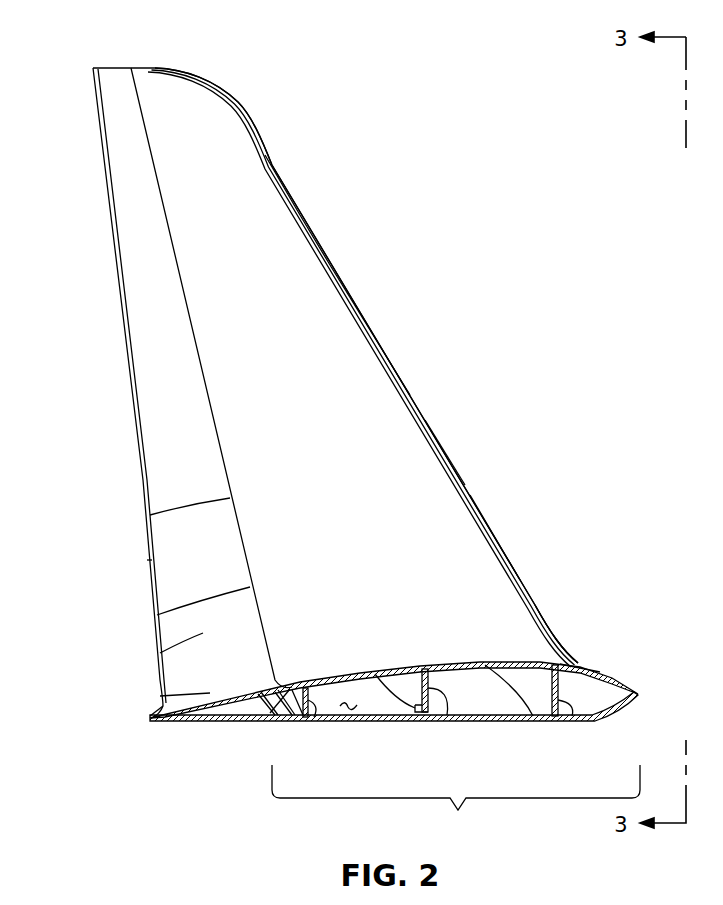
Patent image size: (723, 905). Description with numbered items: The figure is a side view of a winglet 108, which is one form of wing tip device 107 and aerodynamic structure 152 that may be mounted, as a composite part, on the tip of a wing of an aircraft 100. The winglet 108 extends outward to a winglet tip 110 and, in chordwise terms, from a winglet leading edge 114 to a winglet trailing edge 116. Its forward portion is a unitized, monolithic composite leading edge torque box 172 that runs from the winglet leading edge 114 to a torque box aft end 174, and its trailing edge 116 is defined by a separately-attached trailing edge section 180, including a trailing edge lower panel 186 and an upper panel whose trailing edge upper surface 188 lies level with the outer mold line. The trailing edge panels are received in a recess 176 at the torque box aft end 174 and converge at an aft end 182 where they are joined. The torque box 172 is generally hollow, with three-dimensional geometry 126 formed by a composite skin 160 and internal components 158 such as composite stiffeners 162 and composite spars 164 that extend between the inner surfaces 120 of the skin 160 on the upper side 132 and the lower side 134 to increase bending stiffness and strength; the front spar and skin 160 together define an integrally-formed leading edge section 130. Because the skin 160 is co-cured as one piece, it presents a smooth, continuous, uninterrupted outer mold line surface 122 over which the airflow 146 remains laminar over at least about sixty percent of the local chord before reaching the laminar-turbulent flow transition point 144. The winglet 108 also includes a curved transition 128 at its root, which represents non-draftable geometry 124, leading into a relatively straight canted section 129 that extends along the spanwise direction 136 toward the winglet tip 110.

The aircraft 100 is at (276, 150).
The wing tip device 107 is at (177, 70).
The winglet 108 is at (212, 78).
The airflow 146 is at (241, 99).
The aerodynamic structure 152 is at (93, 67).
The winglet tip 110 is at (153, 66).
The upper side 132 is at (283, 227).
The lower side 134 is at (298, 268).
The spanwise direction 136 is at (328, 320).
The leading edge section 130 is at (373, 378).
The outer mold line (OML) surface 122 is at (408, 465).
The canted section 129 is at (482, 518).
The curved transition 128 is at (560, 646).
The non-draftable geometry 124 is at (577, 659).
The winglet leading edge 114 is at (640, 691).
The torque box aft end 174 is at (150, 515).
The aft end of trailing edge panels 182 is at (150, 560).
The laminar-turbulent flow transition point 144 is at (157, 615).
The trailing edge section 180 is at (160, 653).
The trailing edge lower panel 186 is at (160, 696).
The winglet trailing edge 116 is at (148, 716).
The trailing edge upper surface 188 is at (220, 712).
The recess 176 is at (270, 720).
The composite spars 164 is at (312, 725).
The inner surfaces 120 is at (345, 712).
The three-dimensional geometry 126 is at (402, 688).
The internal components 158 is at (446, 703).
The composite skin 160 is at (488, 718).
The composite stiffeners 162 is at (550, 700).
The leading edge torque box 172 is at (456, 802).